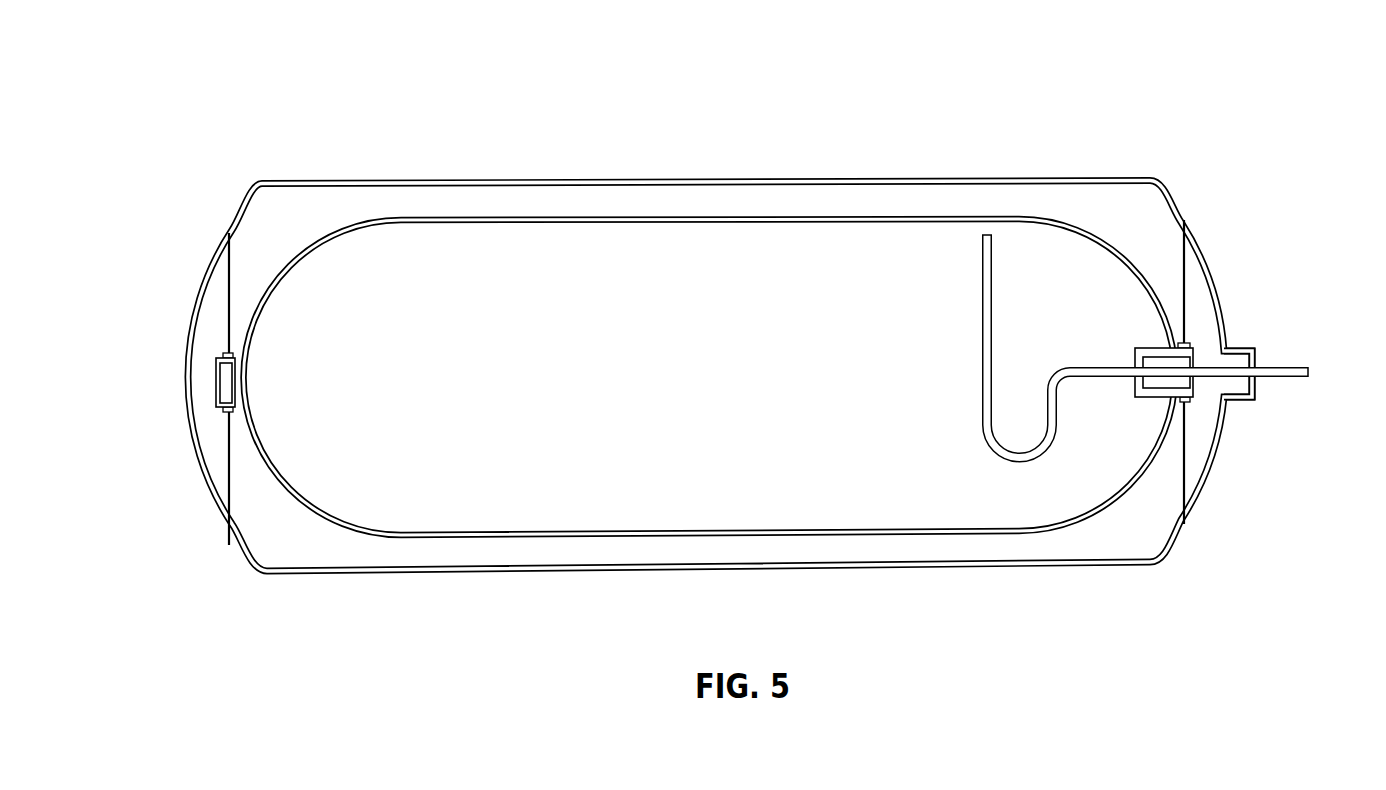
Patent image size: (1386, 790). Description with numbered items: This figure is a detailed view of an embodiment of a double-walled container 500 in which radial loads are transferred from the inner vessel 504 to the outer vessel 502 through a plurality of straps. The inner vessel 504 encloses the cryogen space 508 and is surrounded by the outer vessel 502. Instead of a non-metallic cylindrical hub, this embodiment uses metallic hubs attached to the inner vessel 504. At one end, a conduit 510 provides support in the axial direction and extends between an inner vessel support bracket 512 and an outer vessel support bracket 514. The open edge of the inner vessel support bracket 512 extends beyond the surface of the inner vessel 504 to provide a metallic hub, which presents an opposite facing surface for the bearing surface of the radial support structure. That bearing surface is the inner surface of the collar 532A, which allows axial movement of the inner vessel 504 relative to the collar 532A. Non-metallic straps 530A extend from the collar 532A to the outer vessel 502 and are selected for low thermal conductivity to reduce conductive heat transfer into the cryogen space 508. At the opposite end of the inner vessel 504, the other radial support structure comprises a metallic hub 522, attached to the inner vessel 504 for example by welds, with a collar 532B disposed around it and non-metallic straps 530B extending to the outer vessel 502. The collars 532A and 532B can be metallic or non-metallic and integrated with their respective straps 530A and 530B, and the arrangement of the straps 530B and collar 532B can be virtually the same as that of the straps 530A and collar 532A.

The double-walled container 500 is at (714, 313).
The outer vessel 502 is at (812, 178).
The inner vessel 504 is at (745, 217).
The cryogen space 508 is at (645, 386).
The conduit 510 is at (1268, 374).
The inner vessel support bracket 512 is at (1163, 350).
The outer vessel support bracket 514 is at (1251, 349).
The metallic hub 522 is at (216, 380).
The non-metallic straps 530A is at (1184, 446).
The non-metallic straps 530B is at (229, 327).
The collar 532A is at (1185, 346).
The collar 532B is at (226, 411).